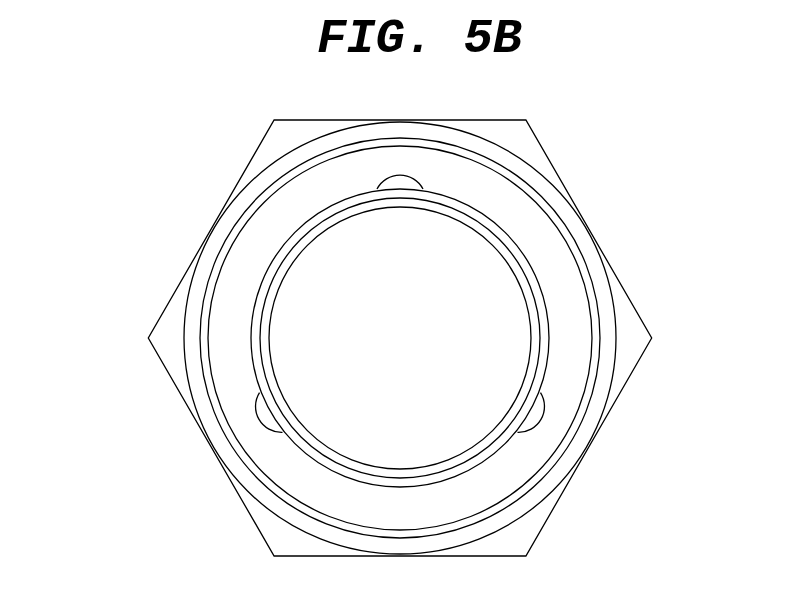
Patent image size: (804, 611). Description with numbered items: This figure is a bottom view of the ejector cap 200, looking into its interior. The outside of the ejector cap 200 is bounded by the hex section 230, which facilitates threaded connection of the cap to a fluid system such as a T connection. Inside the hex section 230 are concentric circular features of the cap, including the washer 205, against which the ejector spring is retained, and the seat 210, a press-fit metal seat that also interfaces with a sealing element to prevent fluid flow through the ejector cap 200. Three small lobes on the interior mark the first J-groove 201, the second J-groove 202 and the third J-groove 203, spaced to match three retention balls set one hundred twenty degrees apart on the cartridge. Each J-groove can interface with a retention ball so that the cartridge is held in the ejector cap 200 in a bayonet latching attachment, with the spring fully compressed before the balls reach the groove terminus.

The ejector cap 200 is at (587, 242).
The hex section 230 is at (505, 119).
The washer 205 is at (253, 352).
The seat 210 is at (268, 296).
The first J-groove 201 is at (275, 436).
The second J-groove 202 is at (545, 430).
The third J-groove 203 is at (400, 175).